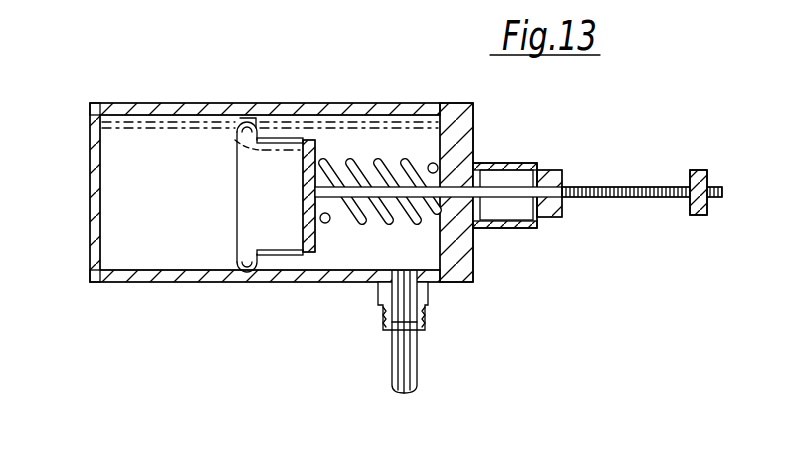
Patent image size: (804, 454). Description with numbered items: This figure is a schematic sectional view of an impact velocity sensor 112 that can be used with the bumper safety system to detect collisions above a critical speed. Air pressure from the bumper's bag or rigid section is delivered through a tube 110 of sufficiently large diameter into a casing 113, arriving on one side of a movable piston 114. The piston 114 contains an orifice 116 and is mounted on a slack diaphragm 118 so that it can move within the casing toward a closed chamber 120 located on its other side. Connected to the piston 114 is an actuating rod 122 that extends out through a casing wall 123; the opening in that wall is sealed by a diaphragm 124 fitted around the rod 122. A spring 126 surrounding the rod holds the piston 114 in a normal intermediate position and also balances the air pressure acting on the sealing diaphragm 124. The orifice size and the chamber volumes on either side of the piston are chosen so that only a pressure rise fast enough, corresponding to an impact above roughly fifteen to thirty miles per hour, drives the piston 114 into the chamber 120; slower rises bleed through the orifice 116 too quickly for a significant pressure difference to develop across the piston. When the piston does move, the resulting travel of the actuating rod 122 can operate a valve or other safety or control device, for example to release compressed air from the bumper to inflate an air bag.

The tube 110 is at (415, 387).
The impact velocity sensor 112 is at (160, 88).
The casing 113 is at (166, 278).
The movable piston 114 is at (323, 156).
The orifice 116 is at (302, 224).
The slack diaphragm 118 is at (264, 156).
The closed chamber 120 is at (130, 170).
The actuating rod 122 is at (490, 192).
The casing wall 123 is at (462, 155).
The sealing diaphragm 124 is at (516, 226).
The spring 126 is at (382, 160).